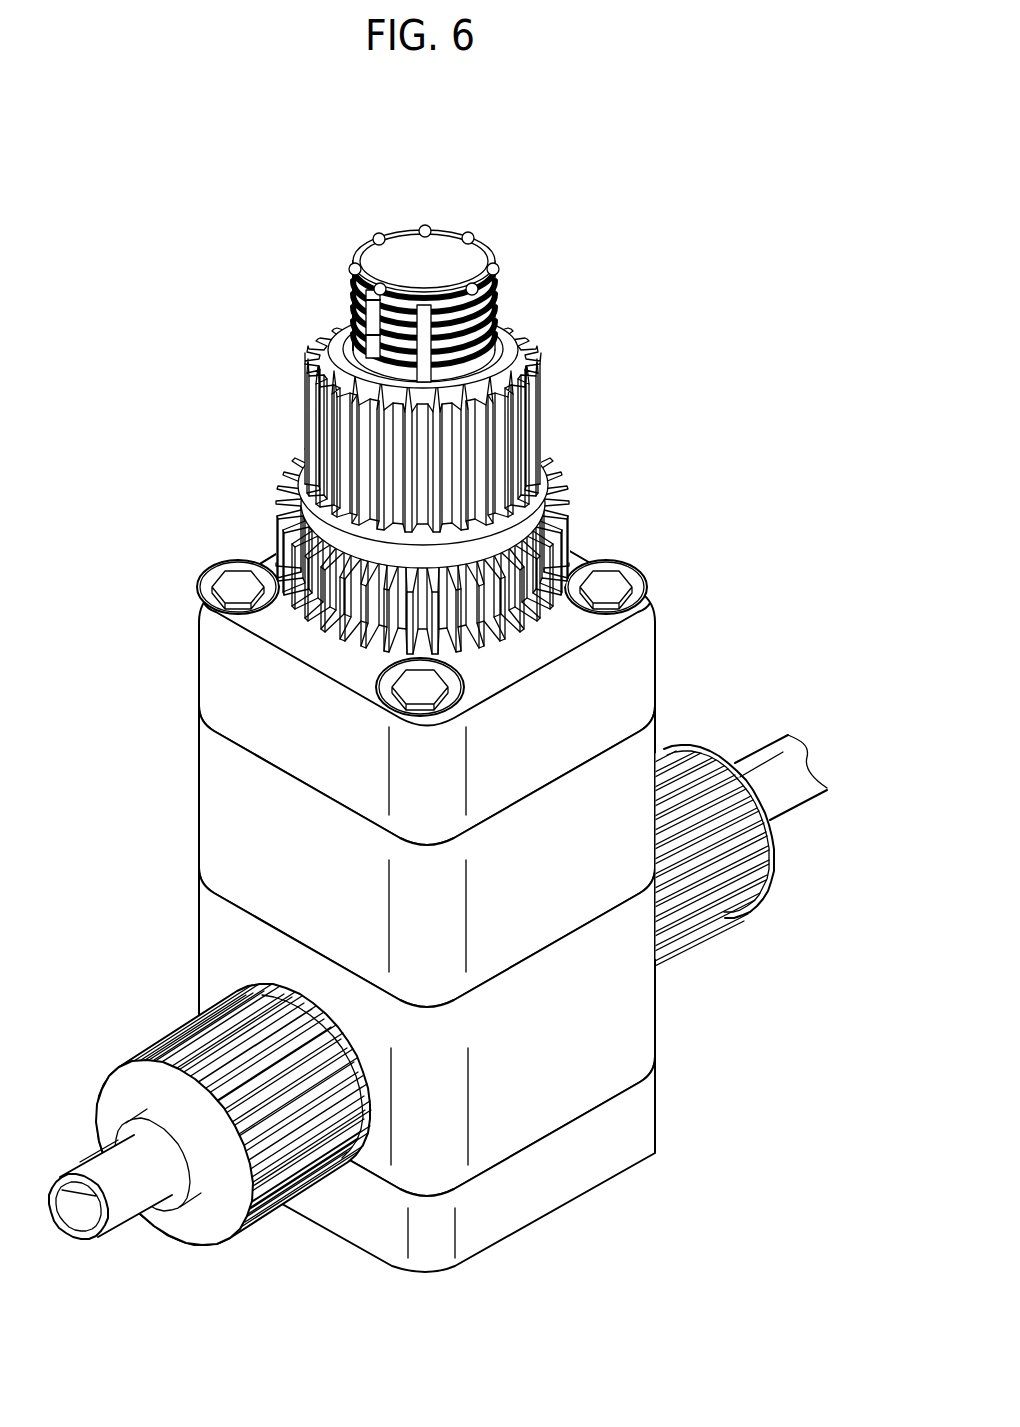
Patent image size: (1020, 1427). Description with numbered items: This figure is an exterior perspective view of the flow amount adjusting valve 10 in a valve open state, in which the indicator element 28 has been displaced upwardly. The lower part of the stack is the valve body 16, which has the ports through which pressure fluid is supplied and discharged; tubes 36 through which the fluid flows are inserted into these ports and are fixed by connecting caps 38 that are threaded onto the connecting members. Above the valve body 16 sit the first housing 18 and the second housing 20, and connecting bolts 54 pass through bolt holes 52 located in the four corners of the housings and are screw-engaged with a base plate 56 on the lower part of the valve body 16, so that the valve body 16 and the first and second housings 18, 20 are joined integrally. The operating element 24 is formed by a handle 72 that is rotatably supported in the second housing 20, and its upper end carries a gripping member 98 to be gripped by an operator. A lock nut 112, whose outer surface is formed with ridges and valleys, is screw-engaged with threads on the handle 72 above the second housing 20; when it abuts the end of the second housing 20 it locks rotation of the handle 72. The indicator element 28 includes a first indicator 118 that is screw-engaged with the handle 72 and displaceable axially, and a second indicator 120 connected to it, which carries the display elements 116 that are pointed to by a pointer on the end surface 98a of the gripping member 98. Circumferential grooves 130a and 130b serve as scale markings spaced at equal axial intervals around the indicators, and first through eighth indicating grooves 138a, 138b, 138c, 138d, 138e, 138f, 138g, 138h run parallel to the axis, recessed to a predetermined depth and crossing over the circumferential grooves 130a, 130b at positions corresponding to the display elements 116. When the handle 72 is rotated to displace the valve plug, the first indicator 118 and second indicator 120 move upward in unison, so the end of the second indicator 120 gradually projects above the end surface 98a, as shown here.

The flow amount adjusting valve 10 is at (707, 180).
The valve body 16 is at (662, 1022).
The first housing 18 is at (210, 806).
The second housing 20 is at (636, 652).
The operating element 24 is at (535, 320).
The indicator element 28 is at (403, 243).
The tube 36 is at (757, 763).
The connecting cap 38 is at (714, 921).
The bolt hole 52 is at (228, 560).
The connecting bolt 54 is at (212, 575).
The base plate 56 is at (497, 1222).
The handle 72 is at (540, 436).
The gripping member 98 is at (318, 424).
The end surface 98a is at (345, 343).
The lock nut 112 is at (300, 478).
The display element 116 is at (408, 228).
The first indicator 118 is at (503, 344).
The second indicator 120 is at (397, 203).
The circumferential grooves 130a is at (348, 328).
The circumferential grooves 130b is at (352, 288).
The first indicating groove 138a is at (497, 302).
The second indicating groove 138b is at (499, 268).
The third indicating groove 138c is at (472, 234).
The fourth indicating groove 138d is at (425, 225).
The fifth indicating groove 138e is at (376, 236).
The sixth indicating groove 138f is at (349, 268).
The seventh indicating groove 138g is at (352, 303).
The eighth indicating groove 138h is at (445, 388).